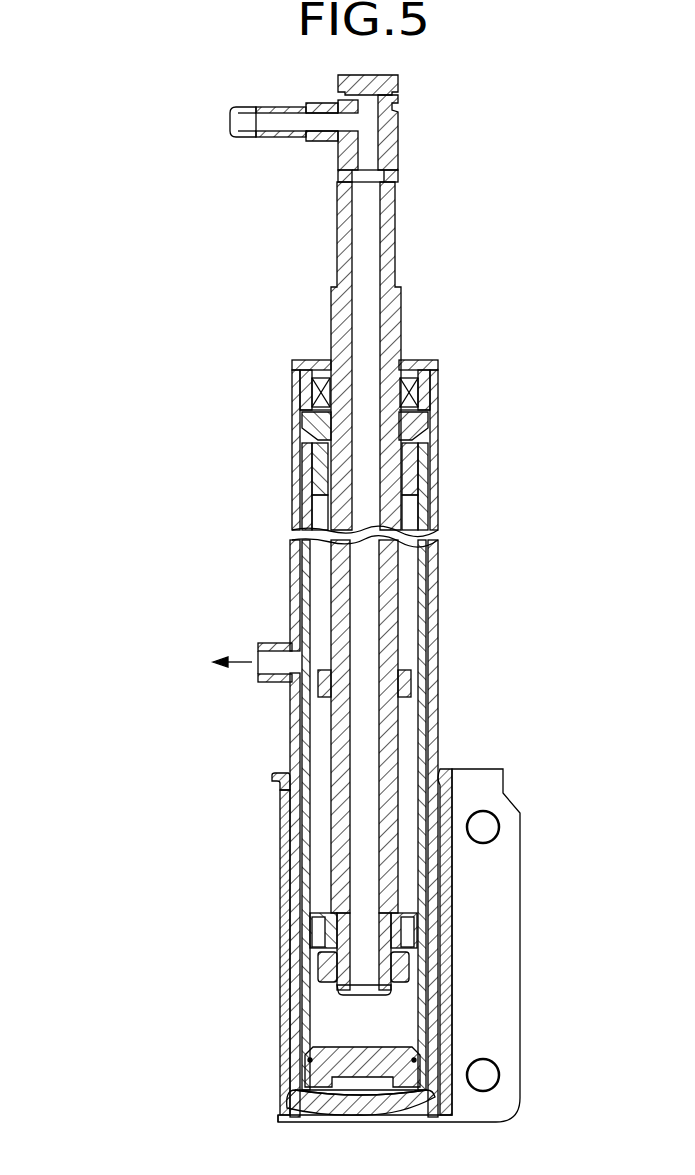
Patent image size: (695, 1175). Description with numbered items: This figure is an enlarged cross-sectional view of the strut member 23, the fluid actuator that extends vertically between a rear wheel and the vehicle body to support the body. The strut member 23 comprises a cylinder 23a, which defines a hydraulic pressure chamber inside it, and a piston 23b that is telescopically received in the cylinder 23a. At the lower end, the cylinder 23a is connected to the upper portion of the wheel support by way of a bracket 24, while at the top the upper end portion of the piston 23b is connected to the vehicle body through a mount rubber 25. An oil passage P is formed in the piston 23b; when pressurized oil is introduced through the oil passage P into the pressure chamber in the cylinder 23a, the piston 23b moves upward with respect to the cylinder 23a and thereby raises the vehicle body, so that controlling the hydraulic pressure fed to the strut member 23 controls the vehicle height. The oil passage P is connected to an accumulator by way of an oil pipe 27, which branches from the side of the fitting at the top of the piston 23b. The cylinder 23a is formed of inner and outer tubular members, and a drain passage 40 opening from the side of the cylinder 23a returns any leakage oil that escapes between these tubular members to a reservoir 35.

The strut member 23 is at (250, 282).
The cylinder 23a is at (438, 695).
The piston 23b is at (392, 584).
The bracket 24 is at (500, 1003).
The mount rubber 25 is at (385, 78).
The oil pipe 27 is at (232, 126).
The reservoir 35 is at (135, 662).
The drain passage 40 is at (281, 643).
The oil passage P is at (372, 324).